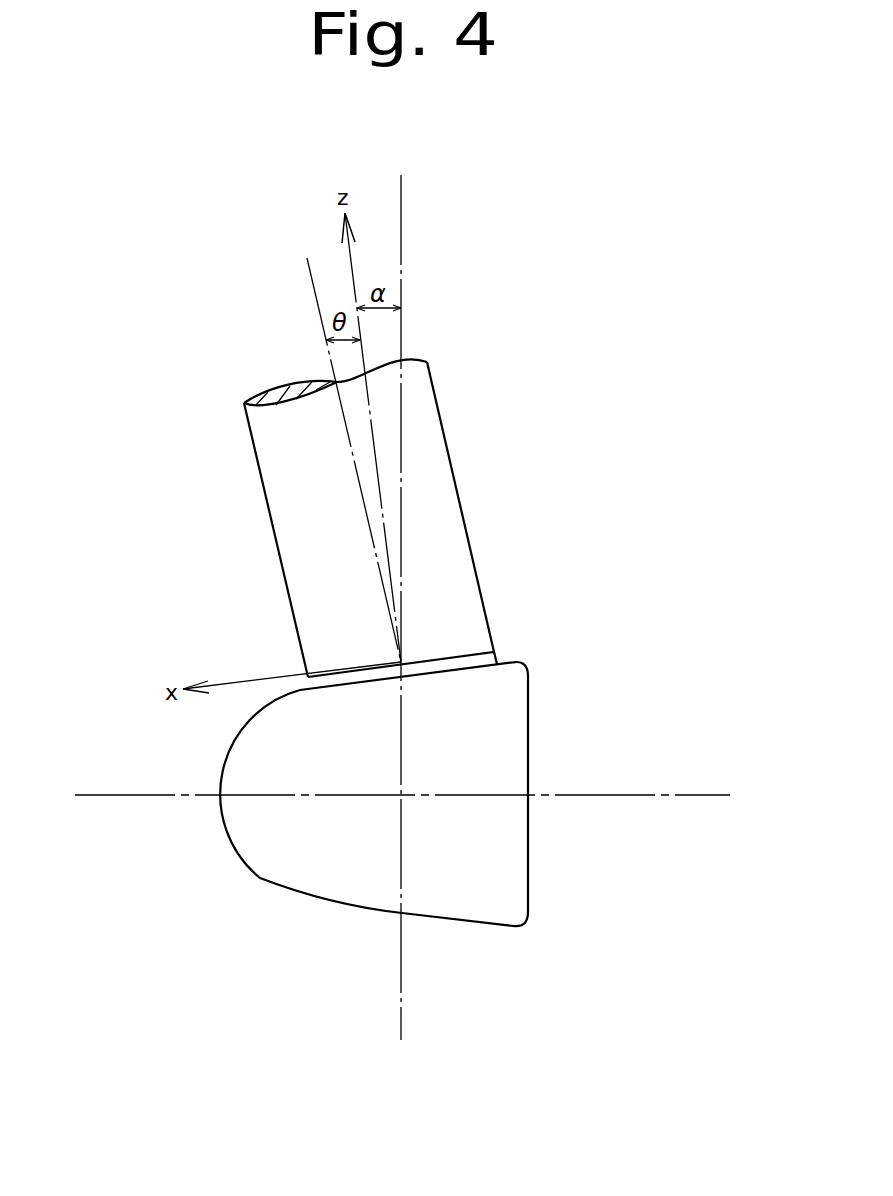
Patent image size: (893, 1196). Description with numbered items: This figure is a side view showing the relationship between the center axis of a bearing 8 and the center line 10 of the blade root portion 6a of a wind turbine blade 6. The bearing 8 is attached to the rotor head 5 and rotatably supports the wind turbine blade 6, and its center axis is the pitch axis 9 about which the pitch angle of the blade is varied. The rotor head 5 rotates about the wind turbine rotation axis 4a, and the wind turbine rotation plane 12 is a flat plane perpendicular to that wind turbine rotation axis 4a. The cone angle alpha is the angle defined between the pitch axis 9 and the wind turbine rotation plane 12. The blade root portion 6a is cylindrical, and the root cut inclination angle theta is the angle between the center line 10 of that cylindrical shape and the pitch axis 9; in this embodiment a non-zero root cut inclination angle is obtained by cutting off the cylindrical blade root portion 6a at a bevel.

The wind turbine rotation plane 12 is at (401, 200).
The pitch axis 9 is at (352, 258).
The center line 10 is at (318, 303).
The wind turbine blade 6 is at (336, 518).
The blade root portion 6a is at (278, 553).
The bearing 8 is at (337, 677).
The rotor head 5 is at (250, 870).
The wind turbine rotation axis 4a is at (118, 795).